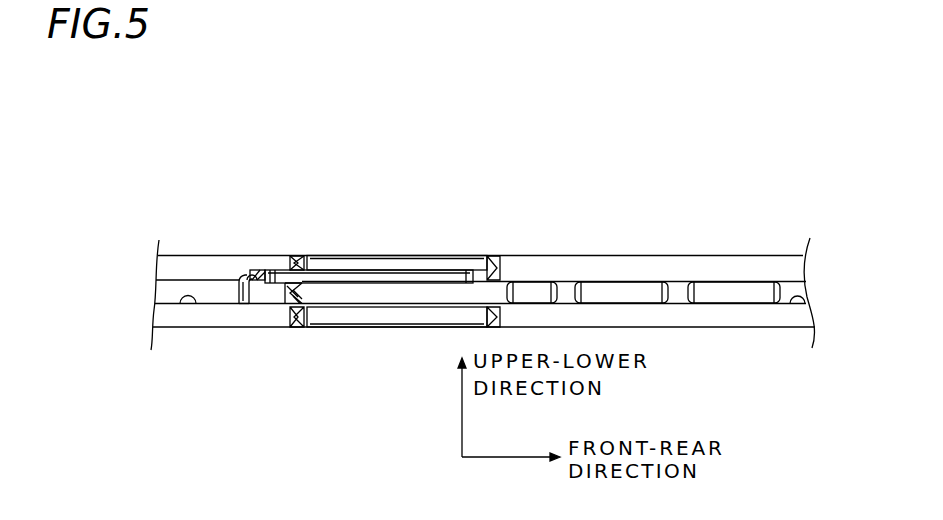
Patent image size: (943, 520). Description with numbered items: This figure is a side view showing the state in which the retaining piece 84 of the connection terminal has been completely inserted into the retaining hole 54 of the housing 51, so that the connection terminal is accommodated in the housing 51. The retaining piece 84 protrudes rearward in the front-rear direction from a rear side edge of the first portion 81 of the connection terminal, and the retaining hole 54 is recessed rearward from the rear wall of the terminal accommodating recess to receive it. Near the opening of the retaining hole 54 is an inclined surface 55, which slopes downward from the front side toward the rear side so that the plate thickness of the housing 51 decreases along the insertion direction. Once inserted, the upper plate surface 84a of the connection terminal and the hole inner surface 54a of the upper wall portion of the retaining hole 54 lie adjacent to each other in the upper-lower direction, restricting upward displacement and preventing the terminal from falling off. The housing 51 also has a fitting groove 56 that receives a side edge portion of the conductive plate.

The housing 51 is at (641, 272).
The retaining hole 54 is at (243, 276).
The hole inner surface 54a is at (270, 300).
The inclined surface 55 is at (290, 283).
The fitting groove 56 is at (176, 306).
The first portion 81 is at (410, 277).
The retaining piece 84 is at (291, 258).
The upper plate surface 84a is at (276, 266).